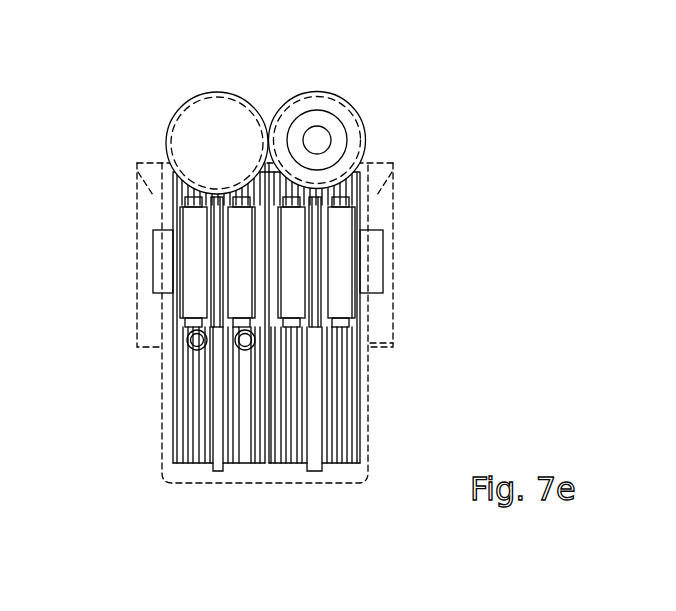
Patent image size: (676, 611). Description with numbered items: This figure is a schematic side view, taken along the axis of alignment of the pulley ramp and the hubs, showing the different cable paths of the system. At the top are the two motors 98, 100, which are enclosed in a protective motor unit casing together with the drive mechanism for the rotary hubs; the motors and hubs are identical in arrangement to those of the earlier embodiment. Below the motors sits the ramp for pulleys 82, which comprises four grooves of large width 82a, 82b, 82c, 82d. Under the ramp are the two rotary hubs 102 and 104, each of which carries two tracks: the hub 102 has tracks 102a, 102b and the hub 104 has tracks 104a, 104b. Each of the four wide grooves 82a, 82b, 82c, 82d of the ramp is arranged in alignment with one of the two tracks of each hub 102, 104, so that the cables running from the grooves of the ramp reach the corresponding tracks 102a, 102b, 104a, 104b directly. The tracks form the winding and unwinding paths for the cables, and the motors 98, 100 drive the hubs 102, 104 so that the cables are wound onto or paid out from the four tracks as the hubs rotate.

The motor 98 is at (198, 98).
The motor 100 is at (352, 100).
The ramp for pulleys 82 is at (368, 309).
The groove of large width 82a is at (197, 284).
The groove of large width 82b is at (243, 258).
The groove of large width 82c is at (293, 258).
The groove of large width 82d is at (340, 284).
The rotary hub 102 is at (170, 439).
The track 102a is at (190, 445).
The track 102b is at (240, 448).
The rotary hub 104 is at (378, 439).
The track 104a is at (285, 447).
The track 104b is at (335, 447).